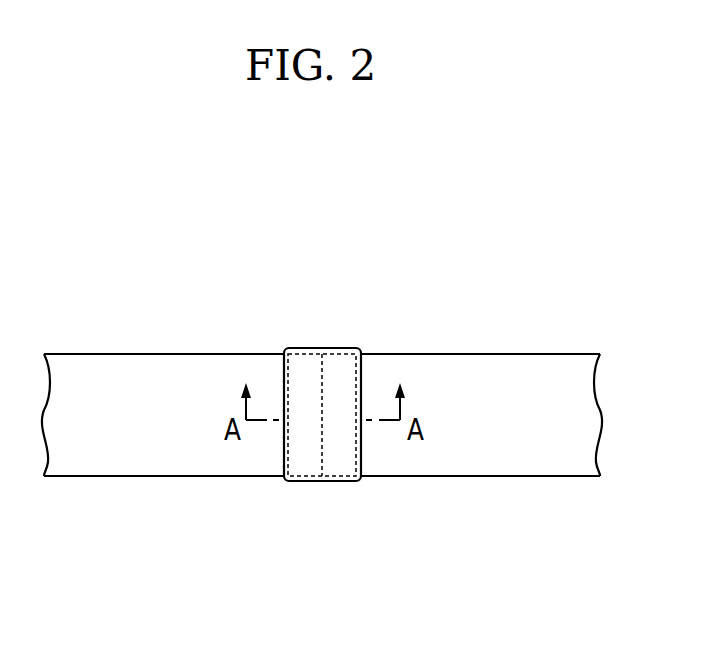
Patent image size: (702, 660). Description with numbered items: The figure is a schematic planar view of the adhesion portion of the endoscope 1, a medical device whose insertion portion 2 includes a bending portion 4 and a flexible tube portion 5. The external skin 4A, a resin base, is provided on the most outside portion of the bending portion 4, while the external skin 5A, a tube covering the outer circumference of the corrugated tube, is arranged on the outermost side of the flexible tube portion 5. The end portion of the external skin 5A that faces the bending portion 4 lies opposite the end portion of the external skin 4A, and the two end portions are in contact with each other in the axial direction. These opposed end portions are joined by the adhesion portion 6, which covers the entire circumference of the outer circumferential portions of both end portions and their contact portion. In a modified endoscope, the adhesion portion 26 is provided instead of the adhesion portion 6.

The endoscope 1 is at (308, 231).
The insertion portion 2 is at (462, 273).
The bending portion 4 is at (481, 369).
The external skin 4A is at (518, 365).
The flexible tube portion 5 is at (163, 369).
The external skin 5A is at (149, 363).
The adhesion portion 6 is at (335, 365).
The adhesion portion 26 is at (338, 372).